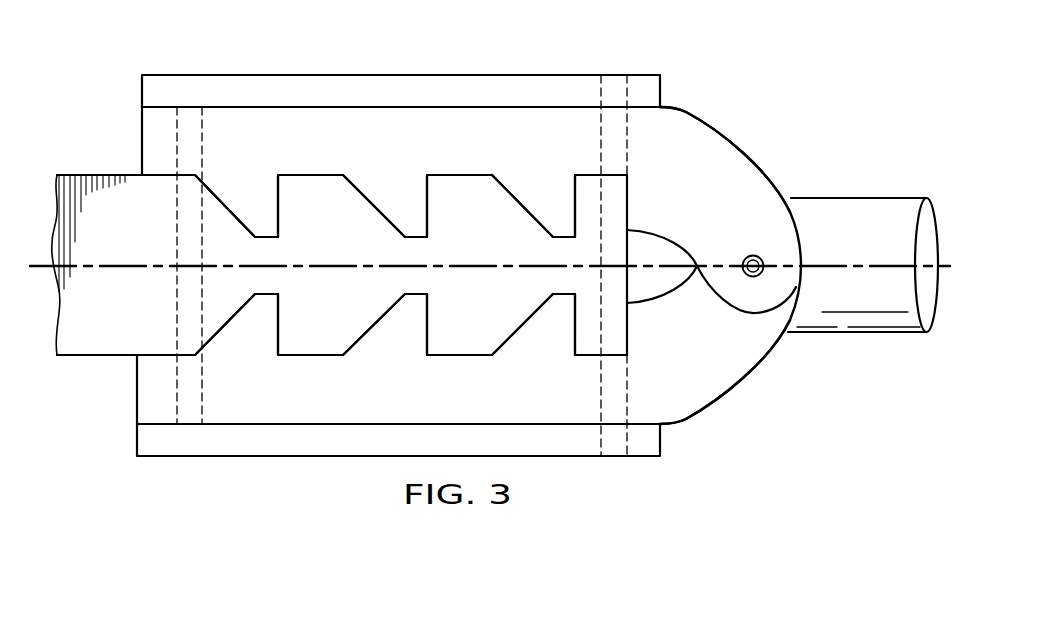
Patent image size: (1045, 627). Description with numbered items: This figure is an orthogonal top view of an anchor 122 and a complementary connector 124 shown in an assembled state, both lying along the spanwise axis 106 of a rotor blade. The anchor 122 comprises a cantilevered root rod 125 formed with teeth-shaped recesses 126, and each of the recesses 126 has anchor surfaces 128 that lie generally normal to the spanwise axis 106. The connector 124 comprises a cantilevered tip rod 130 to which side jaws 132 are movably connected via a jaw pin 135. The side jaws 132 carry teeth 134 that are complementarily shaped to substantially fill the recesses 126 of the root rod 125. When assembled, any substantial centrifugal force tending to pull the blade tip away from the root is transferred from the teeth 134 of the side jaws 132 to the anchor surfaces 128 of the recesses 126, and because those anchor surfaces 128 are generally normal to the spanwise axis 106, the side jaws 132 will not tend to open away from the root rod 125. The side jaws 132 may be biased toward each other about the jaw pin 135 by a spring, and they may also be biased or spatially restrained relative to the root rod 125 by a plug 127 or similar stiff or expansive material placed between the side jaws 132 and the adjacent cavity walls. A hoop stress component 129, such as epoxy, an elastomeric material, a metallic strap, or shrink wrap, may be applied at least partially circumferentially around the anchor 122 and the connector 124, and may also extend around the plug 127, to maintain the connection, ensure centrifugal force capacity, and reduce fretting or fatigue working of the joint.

The spanwise axis 106 is at (848, 263).
The anchor 122 is at (104, 174).
The connector 124 is at (744, 148).
The root rod 125 is at (95, 347).
The recesses 126 is at (236, 208).
The plug 127 is at (388, 75).
The anchor surfaces 128 is at (277, 195).
The hoop stress component 129 is at (175, 298).
The tip rod 130 is at (845, 318).
The side jaws 132 is at (680, 108).
The teeth 134 is at (270, 225).
The jaw pin 135 is at (752, 255).